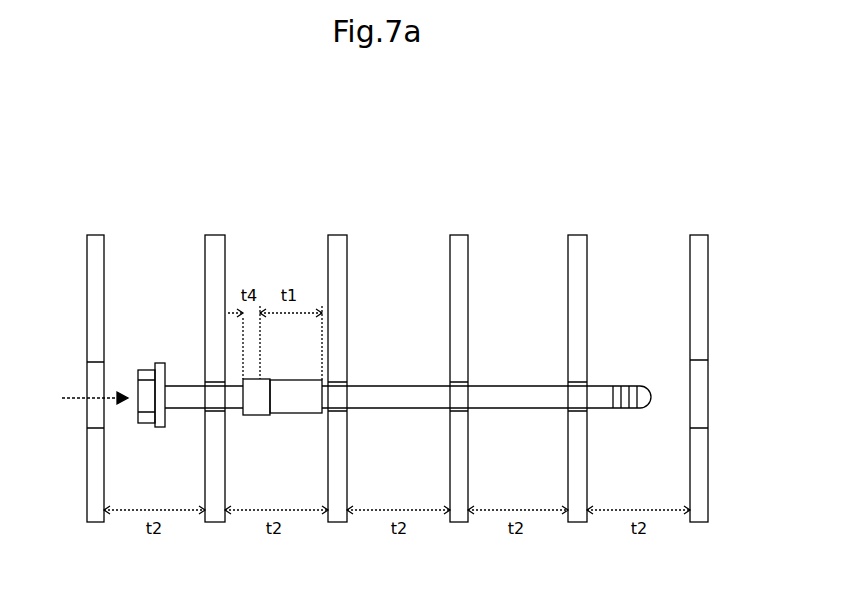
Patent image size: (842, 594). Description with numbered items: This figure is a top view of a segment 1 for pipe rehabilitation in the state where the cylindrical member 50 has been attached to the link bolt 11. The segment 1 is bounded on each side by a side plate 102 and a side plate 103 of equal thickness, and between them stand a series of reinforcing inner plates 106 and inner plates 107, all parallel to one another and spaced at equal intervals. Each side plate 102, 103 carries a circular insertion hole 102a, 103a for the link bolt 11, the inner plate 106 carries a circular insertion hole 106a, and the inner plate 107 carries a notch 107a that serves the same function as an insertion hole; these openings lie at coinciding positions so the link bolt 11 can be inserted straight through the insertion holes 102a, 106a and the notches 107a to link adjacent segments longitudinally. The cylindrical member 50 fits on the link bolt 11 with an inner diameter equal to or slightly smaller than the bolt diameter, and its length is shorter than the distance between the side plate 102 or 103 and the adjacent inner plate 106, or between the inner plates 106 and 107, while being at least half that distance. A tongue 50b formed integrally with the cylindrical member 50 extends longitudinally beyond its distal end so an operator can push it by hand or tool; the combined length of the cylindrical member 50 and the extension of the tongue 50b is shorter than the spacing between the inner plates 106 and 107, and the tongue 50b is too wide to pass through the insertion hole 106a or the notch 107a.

The segment 1 is at (389, 178).
The link bolt 11 is at (377, 385).
The cylindrical member 50 is at (292, 380).
The tongue 50b is at (259, 398).
The side plate 102 is at (94, 235).
The insertion hole 102a is at (90, 383).
The side plate 103 is at (697, 235).
The insertion hole 103a is at (708, 402).
The inner plate 106 is at (214, 235).
The insertion hole 106a is at (202, 410).
The inner plate 107 is at (336, 235).
The notch 107a is at (322, 412).